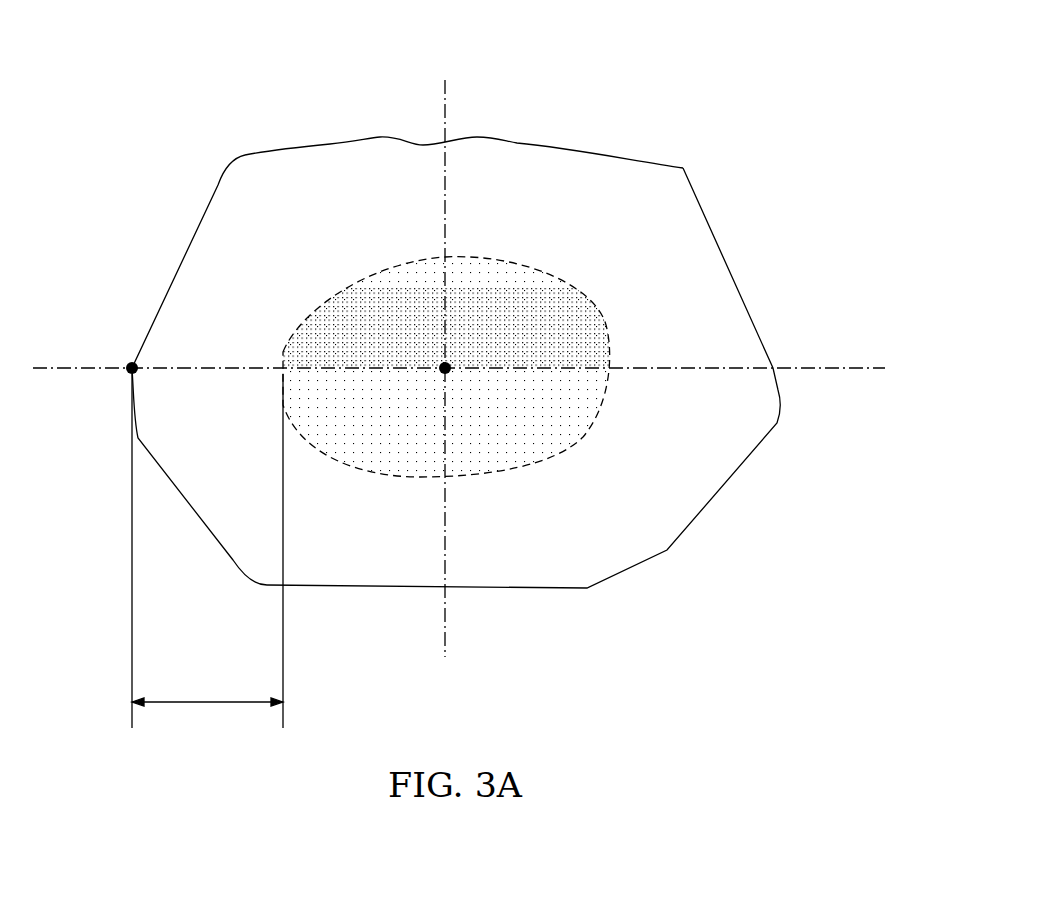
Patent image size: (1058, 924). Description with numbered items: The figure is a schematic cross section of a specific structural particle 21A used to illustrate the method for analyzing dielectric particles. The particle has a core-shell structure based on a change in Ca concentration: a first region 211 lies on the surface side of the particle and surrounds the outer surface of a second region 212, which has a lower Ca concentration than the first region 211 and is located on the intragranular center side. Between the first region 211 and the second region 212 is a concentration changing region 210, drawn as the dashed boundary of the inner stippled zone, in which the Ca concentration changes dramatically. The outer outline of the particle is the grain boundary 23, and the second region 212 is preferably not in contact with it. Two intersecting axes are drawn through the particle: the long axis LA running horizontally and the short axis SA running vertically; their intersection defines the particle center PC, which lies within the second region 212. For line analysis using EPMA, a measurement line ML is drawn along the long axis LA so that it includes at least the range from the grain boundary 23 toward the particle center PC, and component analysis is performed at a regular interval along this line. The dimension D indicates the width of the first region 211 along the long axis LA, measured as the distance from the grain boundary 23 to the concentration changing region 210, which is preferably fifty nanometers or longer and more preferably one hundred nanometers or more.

The specific structural particle 21A is at (518, 297).
The grain boundary 23 is at (517, 143).
The first region 211 is at (643, 217).
The concentration changing region 210 is at (570, 471).
The second region 212 is at (513, 437).
The short axis SA is at (443, 123).
The long axis LA is at (840, 368).
The measurement line ML is at (167, 367).
The particle center PC is at (443, 372).
The width of the first region D is at (207, 557).